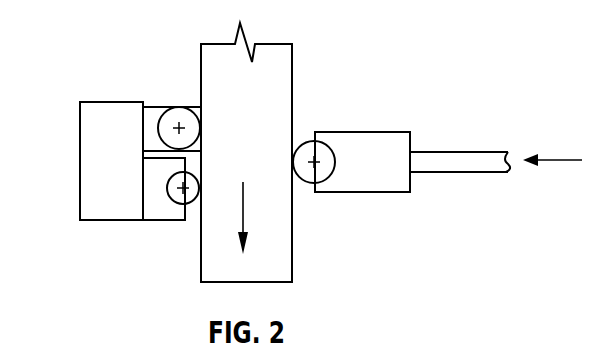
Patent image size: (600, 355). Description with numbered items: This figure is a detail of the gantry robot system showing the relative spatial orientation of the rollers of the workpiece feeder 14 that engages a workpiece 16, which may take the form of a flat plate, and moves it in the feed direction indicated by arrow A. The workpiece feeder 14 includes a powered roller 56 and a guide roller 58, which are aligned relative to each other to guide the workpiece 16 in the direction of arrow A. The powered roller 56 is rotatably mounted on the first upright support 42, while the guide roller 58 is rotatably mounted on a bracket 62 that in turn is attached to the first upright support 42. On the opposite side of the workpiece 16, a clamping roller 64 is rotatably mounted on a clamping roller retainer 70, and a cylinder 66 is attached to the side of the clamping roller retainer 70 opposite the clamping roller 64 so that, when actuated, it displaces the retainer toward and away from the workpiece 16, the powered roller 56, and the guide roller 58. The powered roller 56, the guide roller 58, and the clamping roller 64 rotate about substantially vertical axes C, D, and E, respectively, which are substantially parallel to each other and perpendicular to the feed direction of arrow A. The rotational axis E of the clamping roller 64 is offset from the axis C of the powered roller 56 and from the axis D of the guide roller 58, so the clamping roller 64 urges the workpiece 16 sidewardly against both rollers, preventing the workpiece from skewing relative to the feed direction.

The workpiece 16 is at (283, 60).
The first upright support 42 is at (92, 150).
The powered roller 56 is at (178, 110).
The guide roller 58 is at (185, 211).
The bracket 62 is at (162, 211).
The rotational axis of the powered roller C is at (155, 86).
The rotational axis of the guide roller D is at (195, 175).
The rotational axis of the clamping roller E is at (323, 157).
The arrow indicating feed direction A is at (247, 232).
The workpiece feeder 14 is at (382, 158).
The clamping roller retainer 70 is at (393, 180).
The clamping roller 64 is at (321, 165).
The cylinder 66 is at (447, 158).